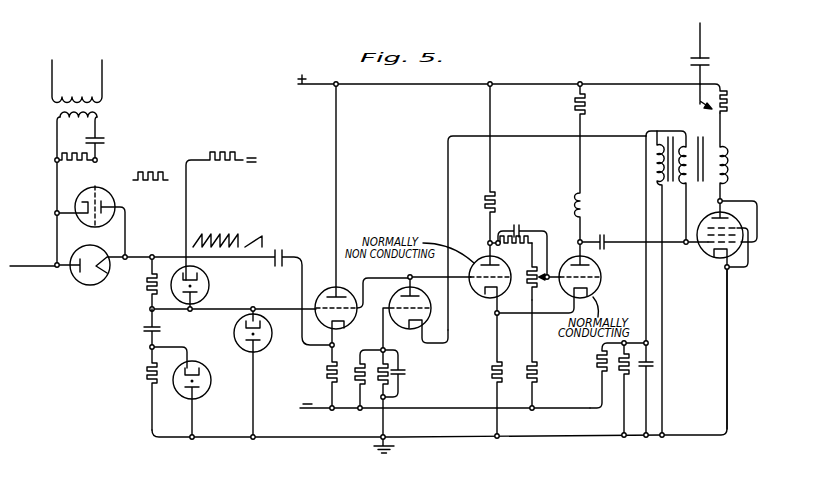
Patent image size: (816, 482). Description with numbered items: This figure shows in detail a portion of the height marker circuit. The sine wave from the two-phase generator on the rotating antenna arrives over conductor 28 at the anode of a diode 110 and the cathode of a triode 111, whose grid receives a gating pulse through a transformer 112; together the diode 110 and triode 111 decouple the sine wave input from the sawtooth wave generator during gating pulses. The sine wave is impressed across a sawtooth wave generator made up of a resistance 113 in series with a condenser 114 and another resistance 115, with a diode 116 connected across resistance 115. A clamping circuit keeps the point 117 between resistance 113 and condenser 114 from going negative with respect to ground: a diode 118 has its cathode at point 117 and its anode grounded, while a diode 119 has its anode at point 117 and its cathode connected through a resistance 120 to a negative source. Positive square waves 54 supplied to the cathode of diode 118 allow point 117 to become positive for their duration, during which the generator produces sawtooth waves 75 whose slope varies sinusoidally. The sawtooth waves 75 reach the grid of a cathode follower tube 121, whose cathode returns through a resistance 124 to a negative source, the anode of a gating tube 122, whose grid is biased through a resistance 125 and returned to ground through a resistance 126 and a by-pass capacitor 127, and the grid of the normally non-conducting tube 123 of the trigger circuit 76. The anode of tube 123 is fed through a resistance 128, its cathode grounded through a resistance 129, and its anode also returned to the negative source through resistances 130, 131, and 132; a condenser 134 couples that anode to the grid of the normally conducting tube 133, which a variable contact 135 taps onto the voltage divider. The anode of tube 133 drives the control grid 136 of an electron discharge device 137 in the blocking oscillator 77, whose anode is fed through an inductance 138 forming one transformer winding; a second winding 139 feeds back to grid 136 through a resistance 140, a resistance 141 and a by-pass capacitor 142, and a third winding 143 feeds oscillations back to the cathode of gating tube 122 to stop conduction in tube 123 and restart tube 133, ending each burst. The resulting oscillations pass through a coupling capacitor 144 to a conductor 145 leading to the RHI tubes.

The conductor 28 is at (22, 256).
The positive square waves 54 is at (157, 176).
The sawtooth waves 75 is at (222, 232).
The trigger circuit 76 is at (546, 81).
The blocking oscillator 77 is at (750, 144).
The diode 110 is at (86, 287).
The triode 111 is at (80, 196).
The transformer 112 is at (100, 107).
The resistance 113 is at (146, 287).
The condenser 114 is at (144, 328).
The resistance 115 is at (146, 374).
The diode 116 is at (211, 386).
The point 117 is at (149, 311).
The diode 118 is at (233, 327).
The diode 119 is at (211, 285).
The resistance 120 is at (222, 153).
The cathode follower tube 121 is at (321, 292).
The gating tube 122 is at (392, 300).
The normally non-conducting tube 123 is at (477, 295).
The resistance 124 is at (327, 372).
The resistance 125 is at (357, 377).
The resistance 126 is at (381, 378).
The by-pass capacitor 127 is at (405, 372).
The resistance 128 is at (486, 207).
The resistance 129 is at (492, 375).
The resistance 130 is at (514, 246).
The resistance 131 is at (529, 291).
The resistance 132 is at (537, 374).
The normally conducting tube 133 is at (603, 270).
The condenser 134 is at (516, 226).
The variable contact 135 is at (538, 283).
The control grid 136 is at (710, 252).
The electron discharge device 137 is at (704, 219).
The inductance 138 is at (727, 167).
The second winding 139 is at (688, 146).
The resistance 140 is at (597, 366).
The resistance 141 is at (617, 370).
The by-pass capacitor 142 is at (642, 370).
The third winding 143 is at (661, 177).
The coupling capacitor 144 is at (691, 61).
The conductor 145 is at (699, 44).